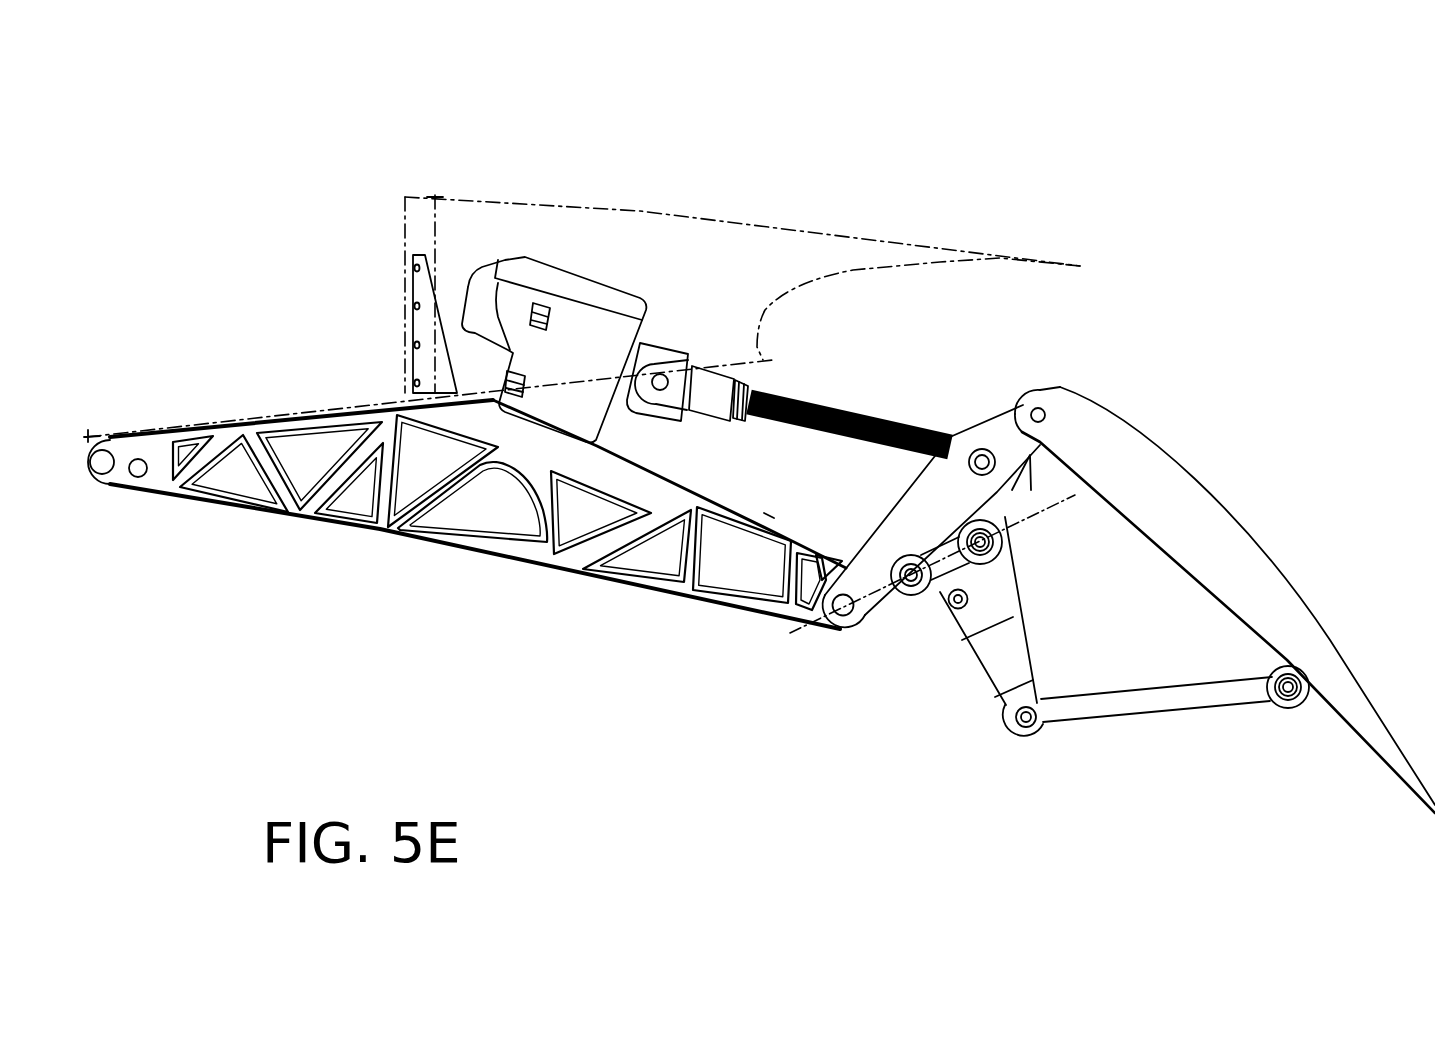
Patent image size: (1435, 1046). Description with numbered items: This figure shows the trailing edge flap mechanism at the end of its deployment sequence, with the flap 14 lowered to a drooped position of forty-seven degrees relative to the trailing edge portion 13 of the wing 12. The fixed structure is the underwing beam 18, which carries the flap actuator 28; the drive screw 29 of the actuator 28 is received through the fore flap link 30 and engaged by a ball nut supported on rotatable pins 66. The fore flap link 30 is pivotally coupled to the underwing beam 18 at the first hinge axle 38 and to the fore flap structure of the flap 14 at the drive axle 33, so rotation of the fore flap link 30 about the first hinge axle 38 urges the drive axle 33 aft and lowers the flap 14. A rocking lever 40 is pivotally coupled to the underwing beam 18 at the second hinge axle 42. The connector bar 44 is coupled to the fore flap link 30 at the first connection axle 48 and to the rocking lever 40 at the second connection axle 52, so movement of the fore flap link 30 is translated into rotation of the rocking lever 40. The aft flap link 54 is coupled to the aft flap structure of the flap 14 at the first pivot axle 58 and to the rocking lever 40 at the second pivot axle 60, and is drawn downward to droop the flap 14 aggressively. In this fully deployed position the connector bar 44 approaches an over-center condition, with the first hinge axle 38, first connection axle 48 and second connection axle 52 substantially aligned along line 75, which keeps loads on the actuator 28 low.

The wing 12 is at (642, 211).
The trailing edge portion 13 is at (1008, 257).
The flap 14 is at (1223, 530).
The underwing beam 18 is at (475, 540).
The flap actuator 28 is at (567, 317).
The drive screw 29 is at (893, 420).
The fore flap link 30 is at (770, 510).
The drive axle 33 is at (1037, 400).
The first hinge axle 38 is at (847, 606).
The rocking lever 40 is at (1015, 648).
The second hinge axle 42 is at (958, 600).
The connector bar 44 is at (945, 560).
The first connection axle 48 is at (908, 578).
The second connection axle 52 is at (990, 538).
The aft flap link 54 is at (1177, 695).
The first pivot axle 58 is at (1278, 680).
The second pivot axle 60 is at (1030, 717).
The rotatable pins 66 is at (970, 465).
The line 75 is at (803, 622).